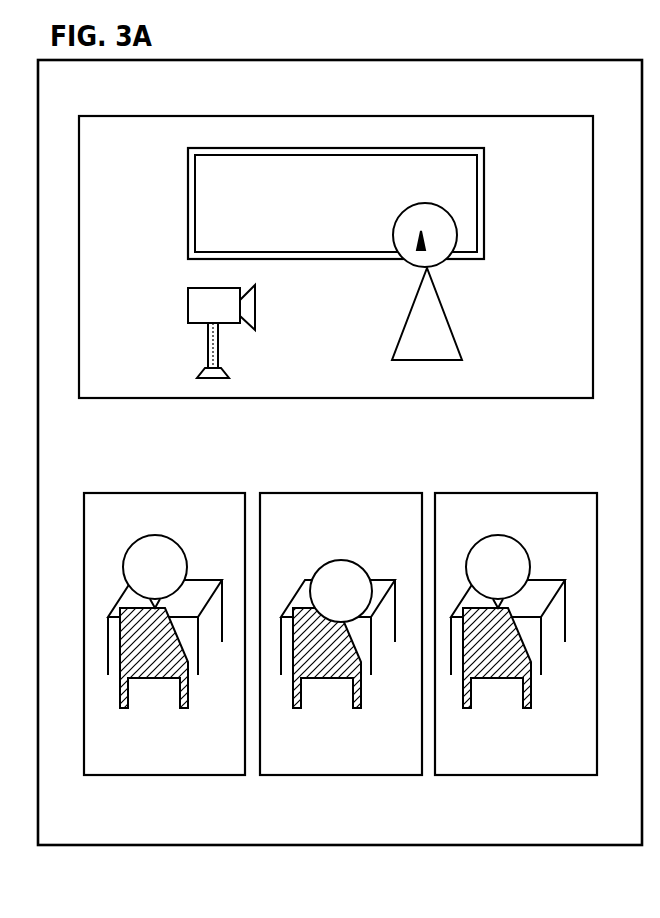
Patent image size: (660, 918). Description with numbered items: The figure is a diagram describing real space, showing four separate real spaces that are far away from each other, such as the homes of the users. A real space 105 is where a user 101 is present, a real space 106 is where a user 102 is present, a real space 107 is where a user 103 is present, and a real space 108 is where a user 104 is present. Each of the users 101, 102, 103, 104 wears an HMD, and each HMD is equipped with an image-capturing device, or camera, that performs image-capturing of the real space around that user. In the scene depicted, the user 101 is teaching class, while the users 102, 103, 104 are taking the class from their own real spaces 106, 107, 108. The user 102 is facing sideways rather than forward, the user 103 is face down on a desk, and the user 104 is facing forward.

The user 101 is at (448, 232).
The user 102 is at (172, 547).
The user 103 is at (350, 568).
The user 104 is at (515, 543).
The real space 105 is at (465, 115).
The real space 106 is at (183, 494).
The real space 107 is at (340, 494).
The real space 108 is at (512, 494).